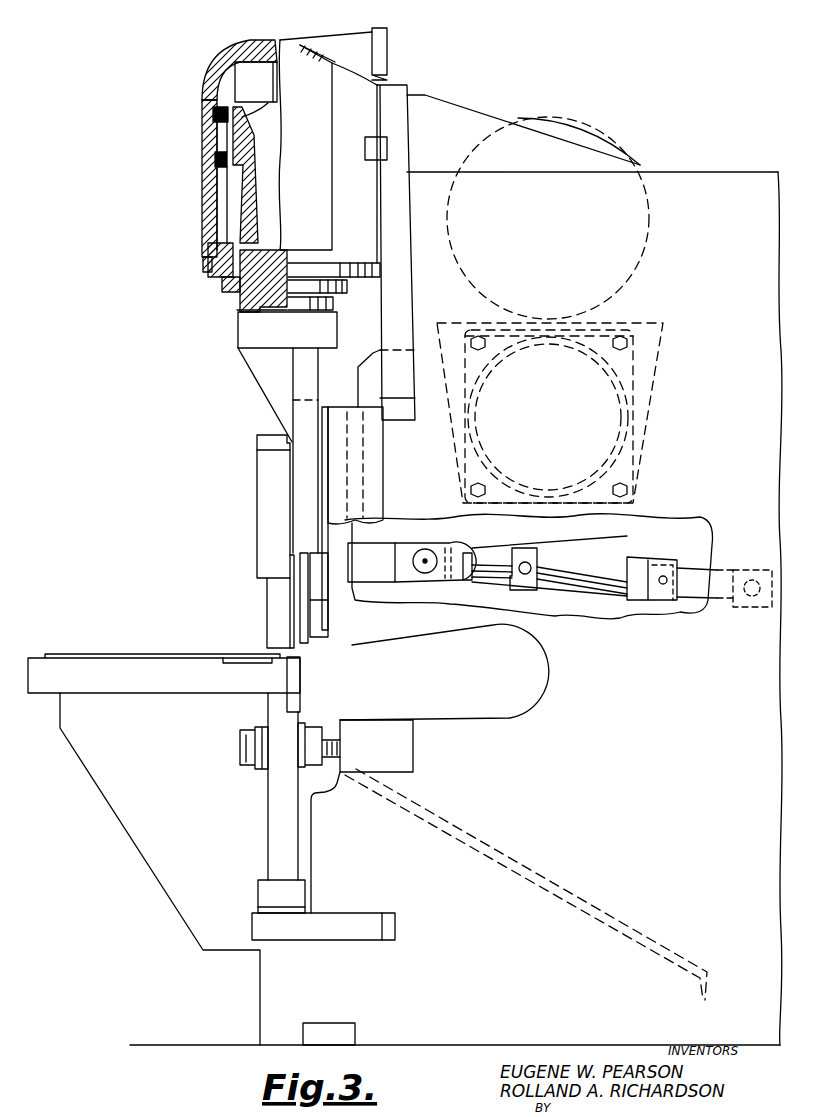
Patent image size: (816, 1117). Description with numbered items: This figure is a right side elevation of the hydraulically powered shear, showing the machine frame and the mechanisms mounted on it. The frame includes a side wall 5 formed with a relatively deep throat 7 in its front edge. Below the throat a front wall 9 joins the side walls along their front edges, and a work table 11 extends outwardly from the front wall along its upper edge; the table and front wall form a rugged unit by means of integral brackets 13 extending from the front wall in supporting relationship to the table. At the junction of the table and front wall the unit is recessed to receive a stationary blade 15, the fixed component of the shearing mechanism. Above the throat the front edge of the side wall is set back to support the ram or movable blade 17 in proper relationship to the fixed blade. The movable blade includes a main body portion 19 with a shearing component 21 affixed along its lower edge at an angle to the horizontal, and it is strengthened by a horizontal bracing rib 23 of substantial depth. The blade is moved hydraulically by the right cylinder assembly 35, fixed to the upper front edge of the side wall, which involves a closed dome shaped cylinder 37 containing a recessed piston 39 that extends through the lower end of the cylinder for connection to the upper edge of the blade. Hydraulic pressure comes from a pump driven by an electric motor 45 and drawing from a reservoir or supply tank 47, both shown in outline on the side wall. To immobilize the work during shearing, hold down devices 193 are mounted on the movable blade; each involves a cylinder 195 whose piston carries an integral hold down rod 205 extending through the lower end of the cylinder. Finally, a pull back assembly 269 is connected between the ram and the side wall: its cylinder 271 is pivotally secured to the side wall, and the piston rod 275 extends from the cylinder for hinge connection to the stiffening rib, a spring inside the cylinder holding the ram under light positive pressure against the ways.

The side wall 5 is at (703, 196).
The throat 7 is at (508, 696).
The front wall 9 is at (268, 802).
The work table 11 is at (170, 655).
The integral bracket 13 is at (140, 810).
The stationary blade 15 is at (300, 688).
The ram or movable blade 17 is at (305, 450).
The main body portion 19 is at (292, 495).
The shearing component 21 is at (304, 640).
The horizontal bracing rib 23 is at (556, 545).
The right cylinder assembly 35 is at (328, 141).
The dome shaped cylinder 37 is at (202, 158).
The recessed piston 39 is at (256, 89).
The electric motor 45 is at (606, 143).
The reservoir or supply tank 47 is at (625, 460).
The hold down device 193 is at (256, 514).
The cylinder 195 is at (258, 475).
The hold down rod 205 is at (268, 602).
The pull back assembly 269 is at (622, 587).
The cylinder 271 is at (630, 566).
The piston rod 275 is at (485, 563).